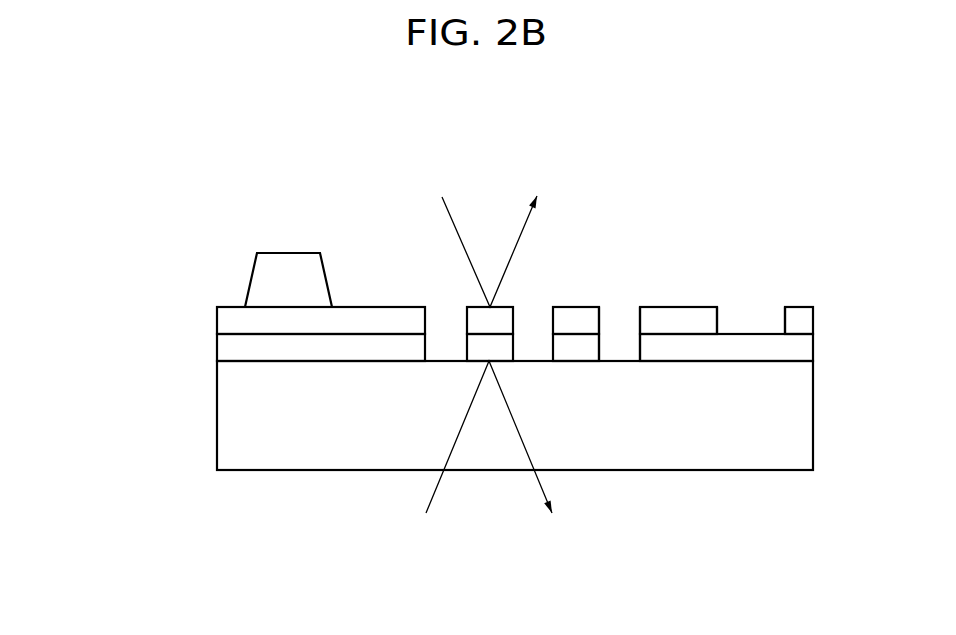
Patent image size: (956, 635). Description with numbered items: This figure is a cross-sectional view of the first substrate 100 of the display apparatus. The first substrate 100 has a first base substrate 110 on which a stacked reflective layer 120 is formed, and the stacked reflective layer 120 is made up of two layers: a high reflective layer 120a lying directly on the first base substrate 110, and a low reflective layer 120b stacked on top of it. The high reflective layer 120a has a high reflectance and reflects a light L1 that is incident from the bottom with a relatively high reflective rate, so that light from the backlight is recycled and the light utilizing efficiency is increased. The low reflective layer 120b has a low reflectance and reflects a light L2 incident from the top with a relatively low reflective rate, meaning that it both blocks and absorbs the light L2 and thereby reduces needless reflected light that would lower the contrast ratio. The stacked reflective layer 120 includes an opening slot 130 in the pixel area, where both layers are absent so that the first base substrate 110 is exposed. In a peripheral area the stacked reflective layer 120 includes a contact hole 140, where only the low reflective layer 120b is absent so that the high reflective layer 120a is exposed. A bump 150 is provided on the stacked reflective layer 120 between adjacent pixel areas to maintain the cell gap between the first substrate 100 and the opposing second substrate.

The first substrate 100 is at (433, 152).
The first base substrate 110 is at (217, 424).
The stacked reflective layer 120 is at (139, 310).
The high reflective layer 120a is at (217, 354).
The low reflective layer 120b is at (217, 314).
The opening slot 130 is at (623, 314).
The contact hole 140 is at (757, 314).
The bump 150 is at (262, 266).
The light incident from the bottom L1 is at (432, 496).
The light incident from the top L2 is at (450, 217).